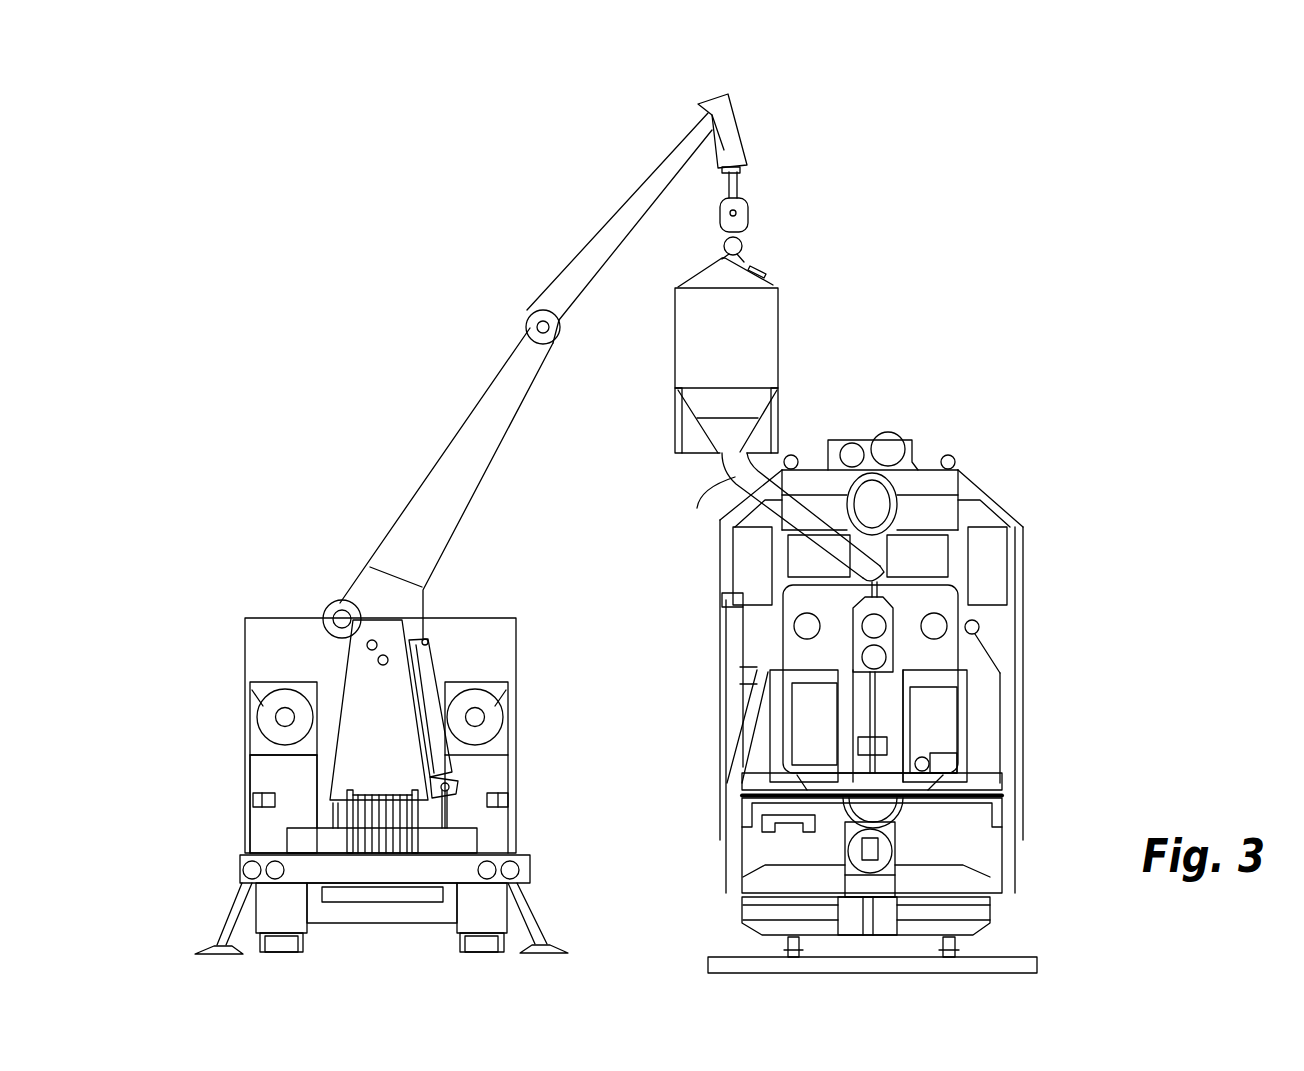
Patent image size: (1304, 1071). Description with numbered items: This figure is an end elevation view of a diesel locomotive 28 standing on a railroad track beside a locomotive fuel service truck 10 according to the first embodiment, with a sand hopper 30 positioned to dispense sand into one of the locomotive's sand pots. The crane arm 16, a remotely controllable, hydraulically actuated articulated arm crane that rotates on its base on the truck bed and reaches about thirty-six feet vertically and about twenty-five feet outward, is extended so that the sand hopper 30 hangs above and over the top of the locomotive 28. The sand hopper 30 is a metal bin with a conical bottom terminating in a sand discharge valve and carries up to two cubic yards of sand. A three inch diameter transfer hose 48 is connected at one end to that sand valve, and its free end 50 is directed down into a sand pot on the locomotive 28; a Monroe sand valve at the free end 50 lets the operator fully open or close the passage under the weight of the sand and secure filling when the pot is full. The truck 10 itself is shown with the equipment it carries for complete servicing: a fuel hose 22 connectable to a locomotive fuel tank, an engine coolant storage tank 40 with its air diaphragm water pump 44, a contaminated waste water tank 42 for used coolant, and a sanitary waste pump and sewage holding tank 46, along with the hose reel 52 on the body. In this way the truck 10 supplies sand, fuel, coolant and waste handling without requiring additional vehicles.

The locomotive fuel service truck 10 is at (318, 577).
The crane arm 16 is at (490, 405).
The fuel hose 22 is at (379, 710).
The diesel locomotive 28 is at (1012, 478).
The sand hopper 30 is at (773, 335).
The engine coolant storage tank 40 is at (273, 772).
The contaminated waste water tank 42 is at (257, 820).
The air diaphragm water pump 44 is at (268, 743).
The sanitary waste pump and sewage holding tank 46 is at (372, 913).
The transfer hose 48 is at (735, 492).
The free end of the transfer hose 50 is at (882, 577).
The second hose reel 52 is at (508, 690).